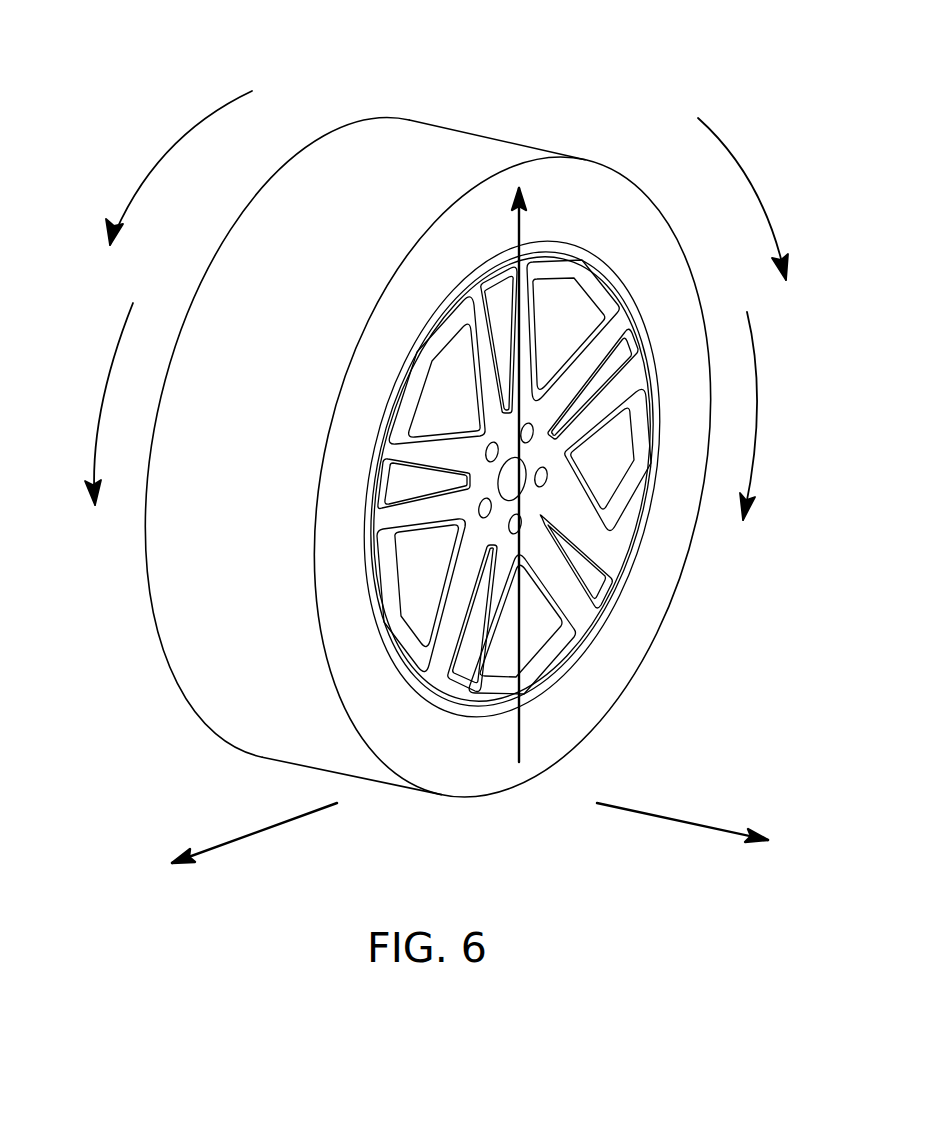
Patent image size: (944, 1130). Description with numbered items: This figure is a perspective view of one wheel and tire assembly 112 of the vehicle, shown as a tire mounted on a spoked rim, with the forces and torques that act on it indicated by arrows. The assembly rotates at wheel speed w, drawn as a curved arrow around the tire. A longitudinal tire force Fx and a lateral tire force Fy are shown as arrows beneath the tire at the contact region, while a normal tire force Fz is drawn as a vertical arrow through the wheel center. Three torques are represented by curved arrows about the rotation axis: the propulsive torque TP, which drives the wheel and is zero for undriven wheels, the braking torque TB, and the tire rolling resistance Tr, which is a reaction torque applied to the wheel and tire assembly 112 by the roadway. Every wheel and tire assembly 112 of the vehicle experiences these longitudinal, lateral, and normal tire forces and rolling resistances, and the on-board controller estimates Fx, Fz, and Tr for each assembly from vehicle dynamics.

The wheel and tire assembly 112 is at (202, 67).
The wheel speed w is at (179, 168).
The propulsive torque TP is at (89, 404).
The tire rolling resistance Tr is at (762, 199).
The braking torque TB is at (767, 416).
The normal tire force Fz is at (538, 475).
The longitudinal tire force Fx is at (254, 845).
The lateral tire force Fy is at (682, 841).